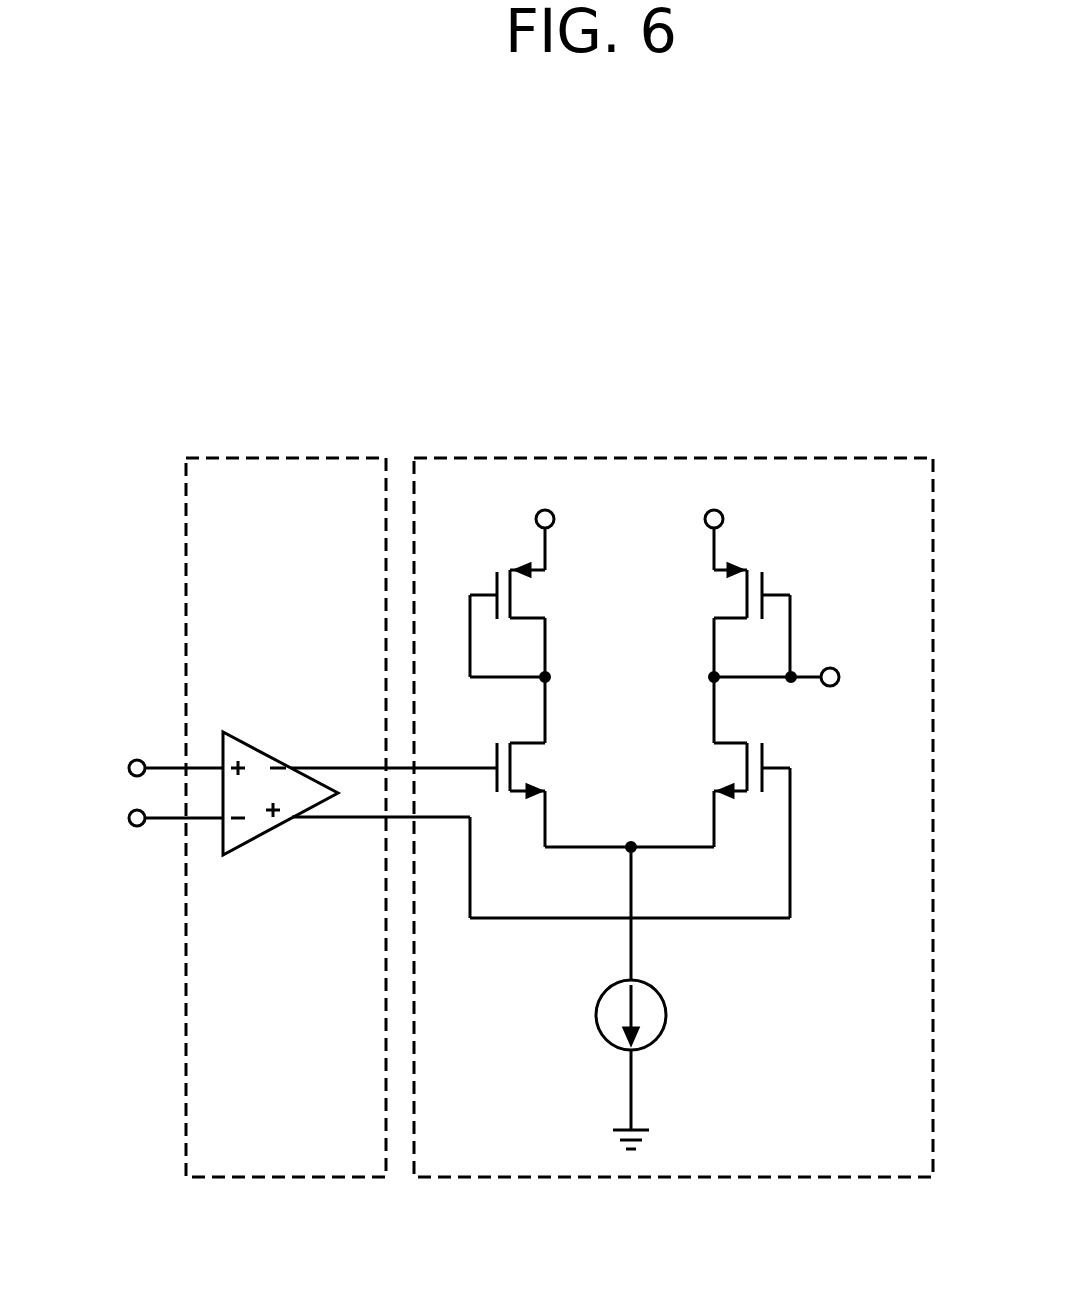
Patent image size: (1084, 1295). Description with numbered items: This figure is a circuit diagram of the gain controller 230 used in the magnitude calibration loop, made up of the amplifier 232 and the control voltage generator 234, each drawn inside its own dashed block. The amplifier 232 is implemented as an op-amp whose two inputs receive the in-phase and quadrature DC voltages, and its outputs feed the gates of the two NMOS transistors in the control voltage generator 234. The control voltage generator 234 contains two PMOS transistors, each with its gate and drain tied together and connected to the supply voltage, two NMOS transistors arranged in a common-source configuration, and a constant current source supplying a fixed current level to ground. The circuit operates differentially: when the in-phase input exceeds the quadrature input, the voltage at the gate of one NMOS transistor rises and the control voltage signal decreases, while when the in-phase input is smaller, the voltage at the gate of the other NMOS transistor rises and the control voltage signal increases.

The gain controller 230 is at (551, 267).
The amplifier 232 is at (264, 753).
The control voltage generator 234 is at (823, 457).